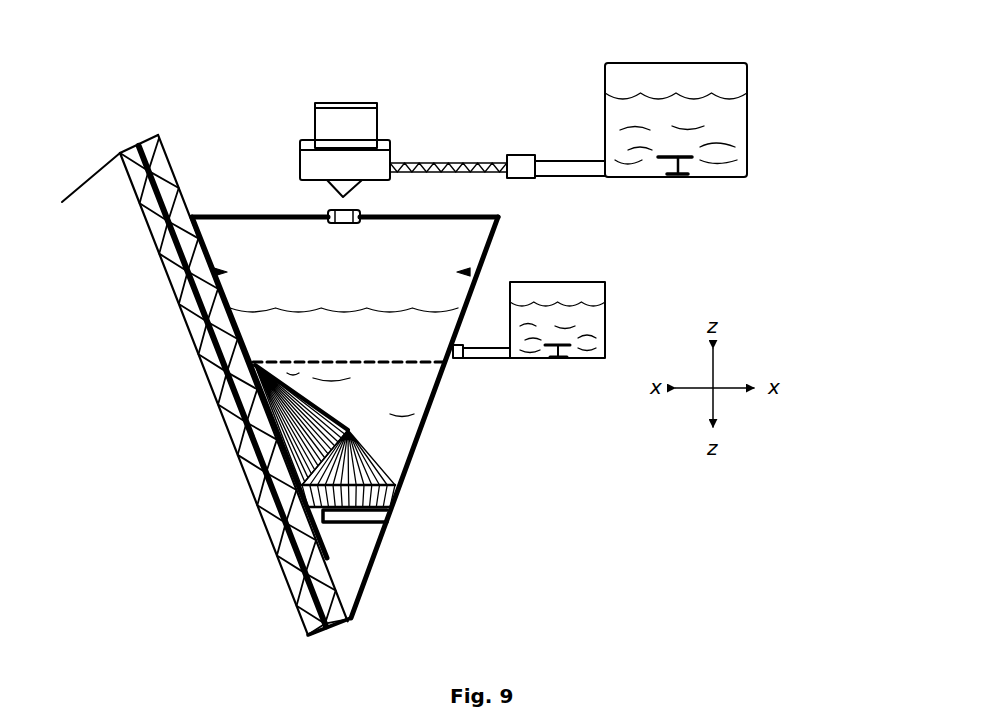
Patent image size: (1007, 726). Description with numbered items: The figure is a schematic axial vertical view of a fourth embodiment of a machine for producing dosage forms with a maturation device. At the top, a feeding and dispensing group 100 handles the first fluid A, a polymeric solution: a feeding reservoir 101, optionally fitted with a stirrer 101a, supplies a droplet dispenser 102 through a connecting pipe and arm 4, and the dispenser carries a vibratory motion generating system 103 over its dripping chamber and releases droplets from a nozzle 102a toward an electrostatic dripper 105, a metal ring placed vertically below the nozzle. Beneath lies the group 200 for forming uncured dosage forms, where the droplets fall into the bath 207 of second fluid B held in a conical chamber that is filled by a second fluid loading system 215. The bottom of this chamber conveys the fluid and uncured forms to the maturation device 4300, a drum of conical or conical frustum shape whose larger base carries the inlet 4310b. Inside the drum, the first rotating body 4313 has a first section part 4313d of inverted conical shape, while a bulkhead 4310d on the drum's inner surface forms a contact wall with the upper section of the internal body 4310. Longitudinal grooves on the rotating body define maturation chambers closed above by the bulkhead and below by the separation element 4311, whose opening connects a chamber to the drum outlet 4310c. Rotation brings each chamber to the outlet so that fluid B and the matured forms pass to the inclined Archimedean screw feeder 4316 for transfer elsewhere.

The feeding and dispensing group 100 is at (296, 117).
The droplet dispenser 102 is at (388, 131).
The nozzle 102a is at (323, 203).
The vibratory motion generating system 103 is at (356, 95).
The electrostatic dripper 105 is at (372, 210).
The supply arm 4 is at (525, 190).
The feeding reservoir 101 is at (717, 108).
The stirrer 101a is at (692, 172).
The second fluid loading system 215 is at (570, 281).
The group for the formation of uncured dosage forms 200 is at (556, 385).
The liquid bath 207 is at (437, 271).
The maturation device 4300 is at (436, 467).
The first internal body 4310 is at (426, 437).
The inlet 4310b is at (308, 357).
The drum outlet 4310c is at (336, 598).
The bulkhead 4310d is at (348, 407).
The separation element 4311 is at (398, 528).
The first rotating body 4313 is at (384, 489).
The first section part 4313d is at (343, 475).
The Archimedean screw feeder 4316 is at (225, 412).